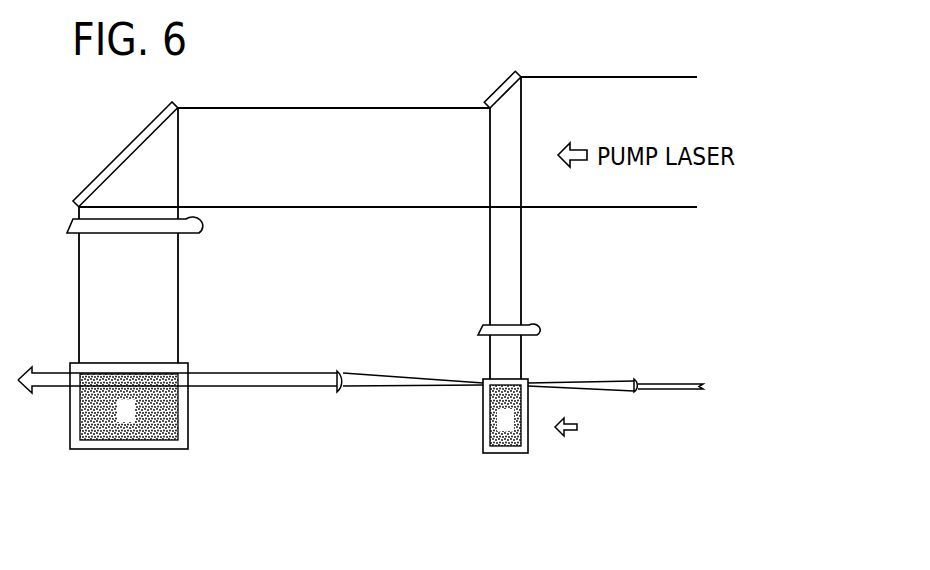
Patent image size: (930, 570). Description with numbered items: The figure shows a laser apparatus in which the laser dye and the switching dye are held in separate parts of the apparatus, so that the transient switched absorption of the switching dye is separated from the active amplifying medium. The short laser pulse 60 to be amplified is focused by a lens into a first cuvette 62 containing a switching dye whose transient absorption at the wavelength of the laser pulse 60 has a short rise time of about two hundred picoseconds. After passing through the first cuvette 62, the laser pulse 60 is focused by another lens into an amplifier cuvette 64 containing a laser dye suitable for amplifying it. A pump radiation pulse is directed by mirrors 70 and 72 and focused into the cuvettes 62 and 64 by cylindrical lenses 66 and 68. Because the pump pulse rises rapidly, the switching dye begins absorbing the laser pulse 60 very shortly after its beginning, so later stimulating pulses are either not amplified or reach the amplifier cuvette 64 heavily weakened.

The laser pulse 60 is at (603, 382).
The first cuvette 62 is at (483, 415).
The amplifier cuvette 64 is at (184, 412).
The cylindrical lens 66 is at (482, 326).
The cylindrical lens 68 is at (190, 235).
The mirror 70 is at (500, 88).
The mirror 72 is at (118, 160).